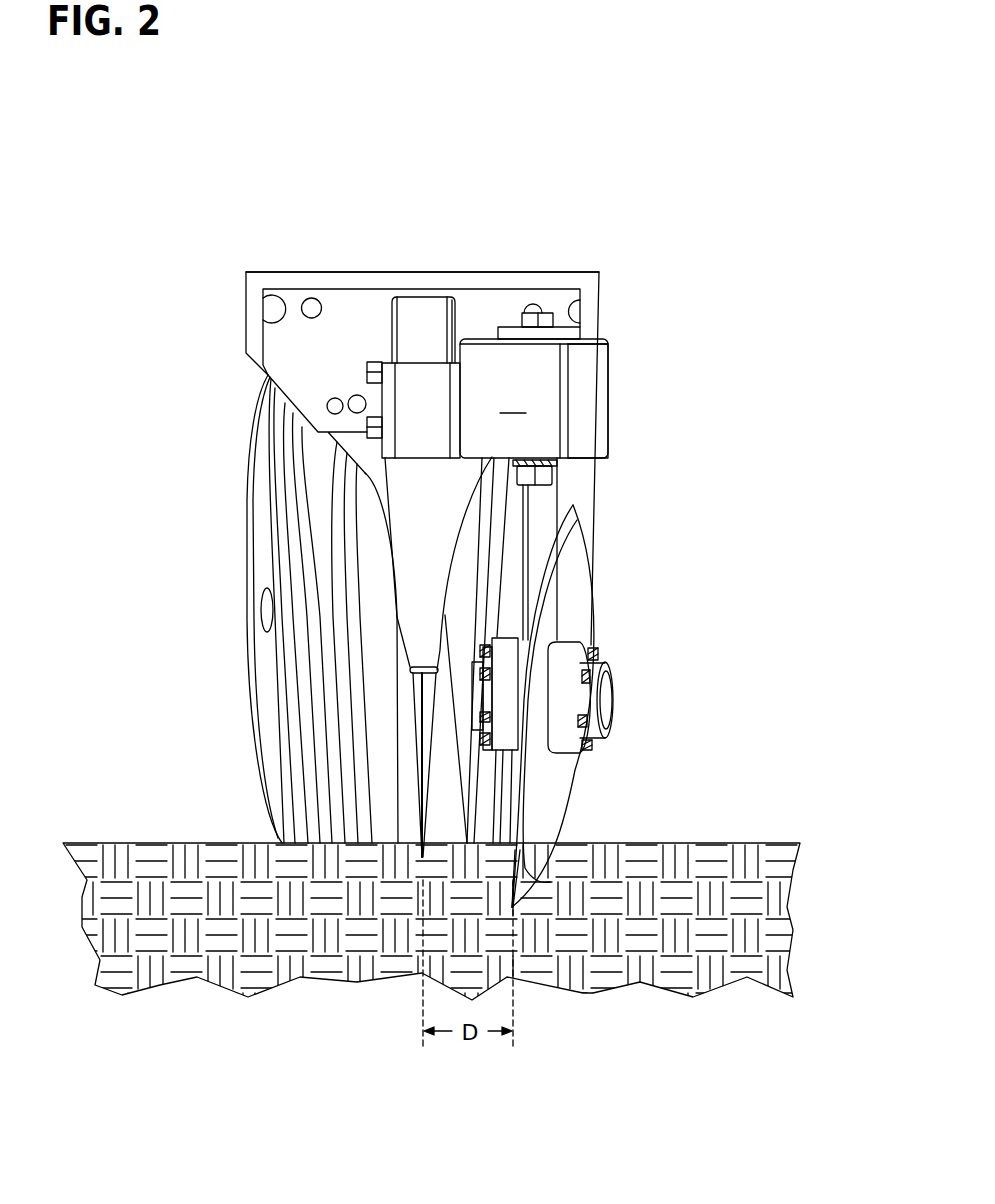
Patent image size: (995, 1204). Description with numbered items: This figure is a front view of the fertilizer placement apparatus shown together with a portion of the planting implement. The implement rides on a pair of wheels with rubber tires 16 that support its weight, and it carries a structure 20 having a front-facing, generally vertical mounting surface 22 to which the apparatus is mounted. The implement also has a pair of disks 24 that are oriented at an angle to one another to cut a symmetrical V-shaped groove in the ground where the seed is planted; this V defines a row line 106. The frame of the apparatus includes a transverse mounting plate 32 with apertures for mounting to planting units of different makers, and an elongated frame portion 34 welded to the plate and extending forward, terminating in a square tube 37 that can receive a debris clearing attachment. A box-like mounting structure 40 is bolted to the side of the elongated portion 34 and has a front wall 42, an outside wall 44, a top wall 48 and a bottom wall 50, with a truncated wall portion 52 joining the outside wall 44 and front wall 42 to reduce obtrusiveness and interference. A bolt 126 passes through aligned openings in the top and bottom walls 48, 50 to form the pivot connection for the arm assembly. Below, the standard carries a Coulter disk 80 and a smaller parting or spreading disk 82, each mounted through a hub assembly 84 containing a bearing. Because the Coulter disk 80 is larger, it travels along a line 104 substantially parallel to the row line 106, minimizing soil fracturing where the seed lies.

The wheels with rubber tires 16 is at (313, 718).
The structure 20 is at (600, 308).
The mounting surface 22 is at (410, 280).
The disks 24 is at (418, 706).
The transverse mounting plate 32 is at (347, 310).
The elongated frame portion 34 is at (408, 337).
The square tube 37 is at (413, 447).
The mounting structure 40 is at (589, 395).
The front wall 42 is at (534, 398).
The outside wall 44 is at (607, 443).
The top wall 48 is at (598, 342).
The bottom wall 50 is at (588, 465).
The truncated wall portion 52 is at (592, 402).
The Coulter disk 80 is at (513, 883).
The parting or spreading disk 82 is at (548, 802).
The hub assembly 84 is at (624, 665).
The line 104 is at (513, 1012).
The row line 106 is at (422, 993).
The bolt 126 is at (545, 318).